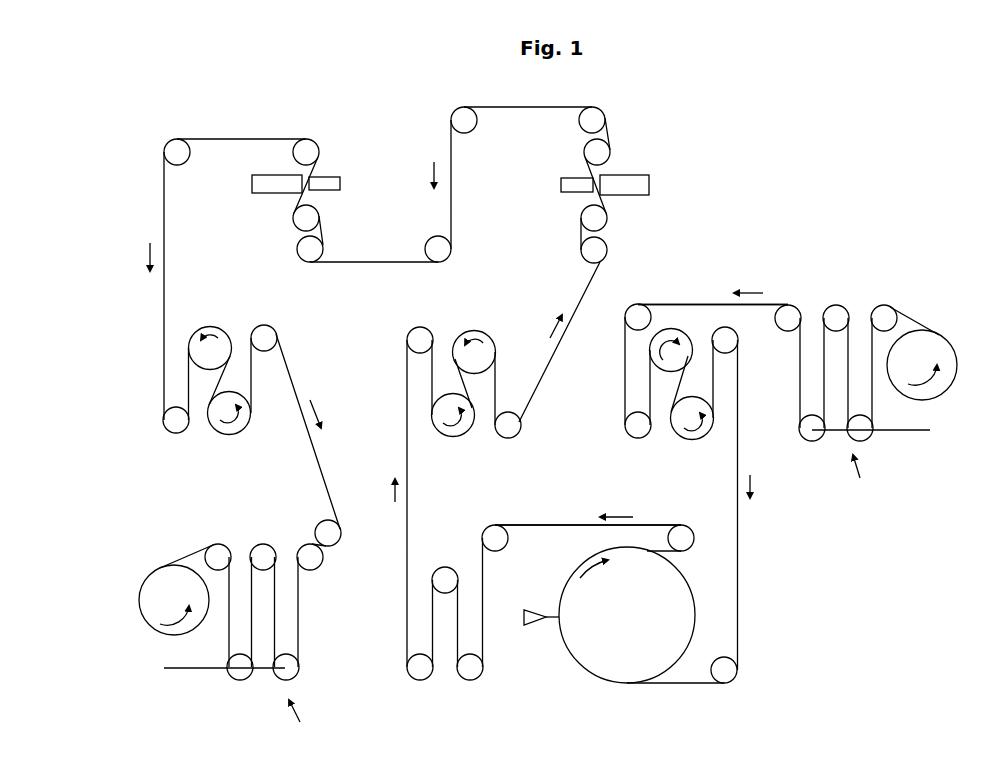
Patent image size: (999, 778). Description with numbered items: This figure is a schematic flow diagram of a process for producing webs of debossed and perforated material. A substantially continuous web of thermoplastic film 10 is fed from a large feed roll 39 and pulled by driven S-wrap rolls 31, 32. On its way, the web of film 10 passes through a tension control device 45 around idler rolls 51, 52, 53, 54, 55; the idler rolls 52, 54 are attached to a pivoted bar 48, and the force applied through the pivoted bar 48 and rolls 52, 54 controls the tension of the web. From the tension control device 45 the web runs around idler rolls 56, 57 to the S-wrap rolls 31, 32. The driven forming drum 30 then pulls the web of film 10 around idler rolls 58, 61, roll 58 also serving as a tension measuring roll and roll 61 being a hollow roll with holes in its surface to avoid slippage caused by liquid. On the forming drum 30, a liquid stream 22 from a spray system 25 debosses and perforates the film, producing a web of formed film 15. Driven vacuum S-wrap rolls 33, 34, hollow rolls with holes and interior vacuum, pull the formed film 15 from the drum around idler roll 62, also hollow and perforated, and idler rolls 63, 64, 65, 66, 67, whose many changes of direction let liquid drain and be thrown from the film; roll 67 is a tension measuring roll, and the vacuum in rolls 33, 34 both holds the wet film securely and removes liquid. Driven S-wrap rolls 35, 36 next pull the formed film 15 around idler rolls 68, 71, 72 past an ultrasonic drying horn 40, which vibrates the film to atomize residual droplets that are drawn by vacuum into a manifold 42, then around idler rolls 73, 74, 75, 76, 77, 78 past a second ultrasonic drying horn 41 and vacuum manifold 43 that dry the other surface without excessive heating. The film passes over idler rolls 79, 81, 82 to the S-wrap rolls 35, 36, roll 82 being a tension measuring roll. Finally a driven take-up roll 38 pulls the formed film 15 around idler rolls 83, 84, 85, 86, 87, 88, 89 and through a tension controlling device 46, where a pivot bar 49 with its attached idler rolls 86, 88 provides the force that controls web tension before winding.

The web of film 10 is at (688, 303).
The web of formed film 15 is at (560, 525).
The liquid stream 22 is at (553, 618).
The spray system 25 is at (533, 610).
The forming drum 30 is at (673, 580).
The driven S-wrap roll 31 is at (682, 338).
The driven S-wrap roll 32 is at (692, 440).
The driven vacuum S-wrap roll 33 is at (458, 428).
The driven vacuum S-wrap roll 34 is at (480, 335).
The driven S-wrap roll 35 is at (212, 332).
The driven S-wrap roll 36 is at (235, 428).
The driven take-up roll 38 is at (147, 598).
The feed roll 39 is at (945, 345).
The ultrasonic drying horn 40 is at (565, 185).
The ultrasonic drying horn 41 is at (326, 178).
The manifold 42 is at (637, 178).
The vacuum manifold 43 is at (253, 187).
The tension control device 45 is at (868, 479).
The tension controlling device 46 is at (305, 724).
The pivoted bar 48 is at (907, 429).
The pivot bar 49 is at (187, 668).
The idler roll 51 is at (890, 311).
The idler roll 52 is at (865, 437).
The idler roll 53 is at (841, 312).
The idler roll 54 is at (799, 425).
The idler roll 55 is at (793, 308).
The idler roll 56 is at (641, 309).
The idler roll 57 is at (633, 433).
The idler roll 58 is at (735, 338).
The idler roll 61 is at (729, 678).
The idler roll 62 is at (683, 528).
The idler roll 63 is at (503, 538).
The idler roll 64 is at (471, 678).
The idler roll 65 is at (443, 572).
The idler roll 66 is at (410, 683).
The idler roll 67 is at (417, 337).
The idler roll 68 is at (515, 433).
The idler roll 71 is at (582, 250).
The idler roll 72 is at (606, 217).
The idler roll 73 is at (606, 145).
The idler roll 74 is at (582, 125).
The idler roll 75 is at (470, 130).
The idler roll 76 is at (427, 248).
The idler roll 77 is at (320, 249).
The idler roll 78 is at (294, 218).
The idler roll 79 is at (294, 150).
The idler roll 81 is at (183, 158).
The idler roll 82 is at (172, 427).
The idler roll 83 is at (267, 335).
The idler roll 84 is at (325, 523).
The idler roll 85 is at (313, 560).
The idler roll 86 is at (282, 677).
The idler roll 87 is at (265, 553).
The idler roll 88 is at (235, 675).
The idler roll 89 is at (218, 553).